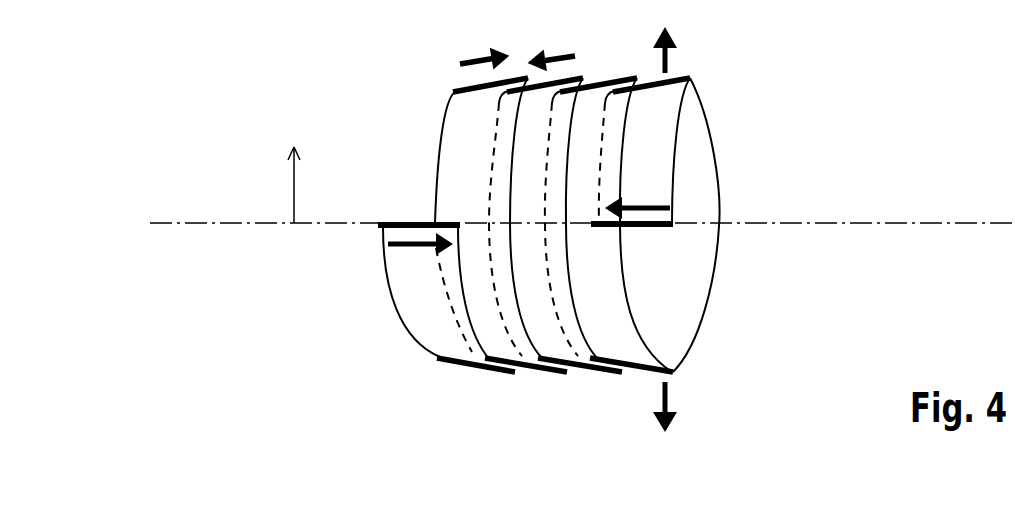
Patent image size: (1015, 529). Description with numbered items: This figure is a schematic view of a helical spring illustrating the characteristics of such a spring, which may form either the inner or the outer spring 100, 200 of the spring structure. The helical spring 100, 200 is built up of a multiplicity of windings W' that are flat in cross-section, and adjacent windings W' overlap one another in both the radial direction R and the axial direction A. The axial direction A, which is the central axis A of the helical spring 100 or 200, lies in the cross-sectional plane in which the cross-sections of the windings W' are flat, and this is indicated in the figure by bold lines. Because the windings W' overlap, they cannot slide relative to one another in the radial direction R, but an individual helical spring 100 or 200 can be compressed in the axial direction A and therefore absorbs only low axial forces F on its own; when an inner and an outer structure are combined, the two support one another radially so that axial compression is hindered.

The inner spring 100 is at (438, 87).
The outer spring 200 is at (442, 101).
The windings W' is at (544, 188).
The force / feed direction arrows F is at (517, 229).
The radial direction R is at (285, 185).
The axial direction or central axis A is at (581, 243).